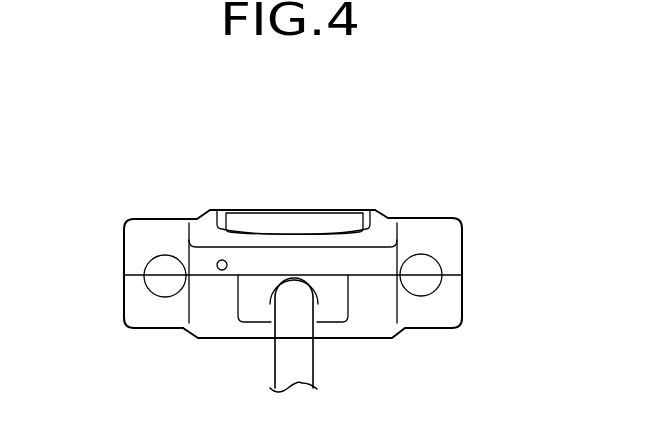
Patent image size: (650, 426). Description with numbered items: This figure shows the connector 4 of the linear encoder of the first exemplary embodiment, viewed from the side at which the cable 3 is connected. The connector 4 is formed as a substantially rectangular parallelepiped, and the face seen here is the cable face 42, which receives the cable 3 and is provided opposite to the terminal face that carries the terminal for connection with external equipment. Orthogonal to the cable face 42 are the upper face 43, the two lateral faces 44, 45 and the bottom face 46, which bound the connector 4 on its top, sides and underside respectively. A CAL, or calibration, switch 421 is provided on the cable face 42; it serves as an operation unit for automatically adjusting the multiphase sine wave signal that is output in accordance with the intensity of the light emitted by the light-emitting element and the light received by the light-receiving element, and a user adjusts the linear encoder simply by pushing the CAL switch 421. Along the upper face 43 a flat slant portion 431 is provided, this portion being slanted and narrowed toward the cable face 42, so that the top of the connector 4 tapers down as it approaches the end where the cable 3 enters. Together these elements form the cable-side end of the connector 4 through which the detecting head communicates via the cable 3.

The connector 4 is at (452, 188).
The cable face 42 is at (463, 305).
The CAL switch 421 is at (207, 214).
The upper face 43 is at (160, 218).
The flat slant portion 431 is at (370, 209).
The lateral face 44 is at (123, 303).
The lateral face 45 is at (463, 237).
The bottom face 46 is at (150, 330).
The cable 3 is at (275, 370).